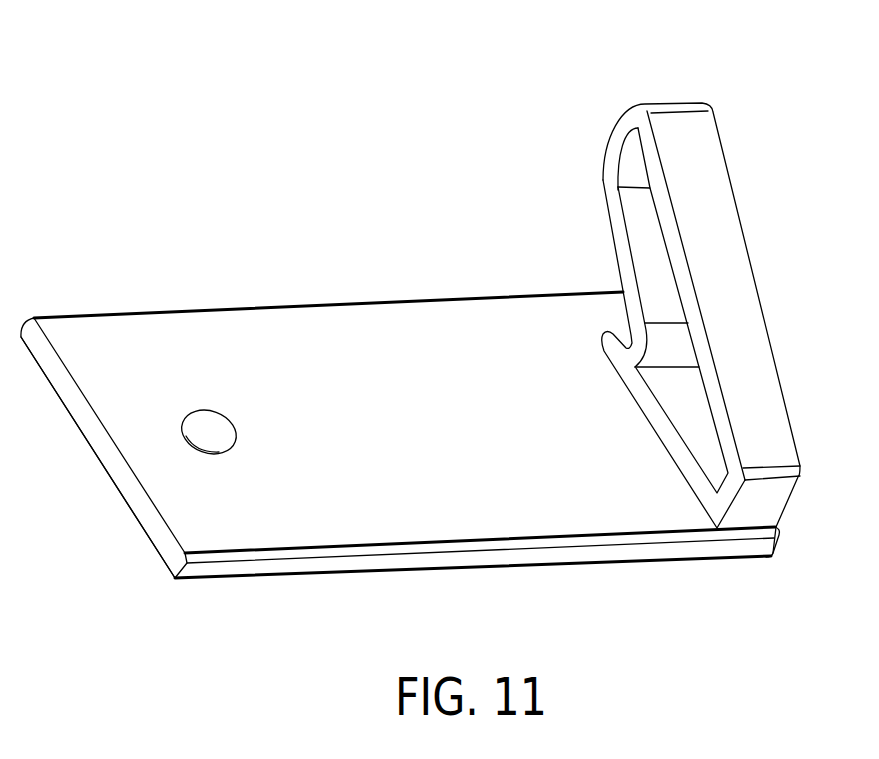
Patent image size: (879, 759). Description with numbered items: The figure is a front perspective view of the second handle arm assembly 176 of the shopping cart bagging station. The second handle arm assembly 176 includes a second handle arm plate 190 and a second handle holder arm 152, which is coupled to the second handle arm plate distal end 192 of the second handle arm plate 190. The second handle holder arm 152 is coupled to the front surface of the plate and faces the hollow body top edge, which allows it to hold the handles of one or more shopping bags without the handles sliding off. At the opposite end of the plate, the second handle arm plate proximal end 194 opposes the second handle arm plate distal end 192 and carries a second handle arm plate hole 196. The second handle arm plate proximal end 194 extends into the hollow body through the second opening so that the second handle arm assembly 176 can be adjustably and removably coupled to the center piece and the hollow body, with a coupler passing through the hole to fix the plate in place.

The second handle arm assembly 176 is at (298, 142).
The second handle arm plate 190 is at (358, 326).
The second handle arm plate hole 196 is at (209, 430).
The second handle arm plate proximal end 194 is at (170, 593).
The second handle arm plate distal end 192 is at (782, 570).
The second handle holder arm 152 is at (690, 132).